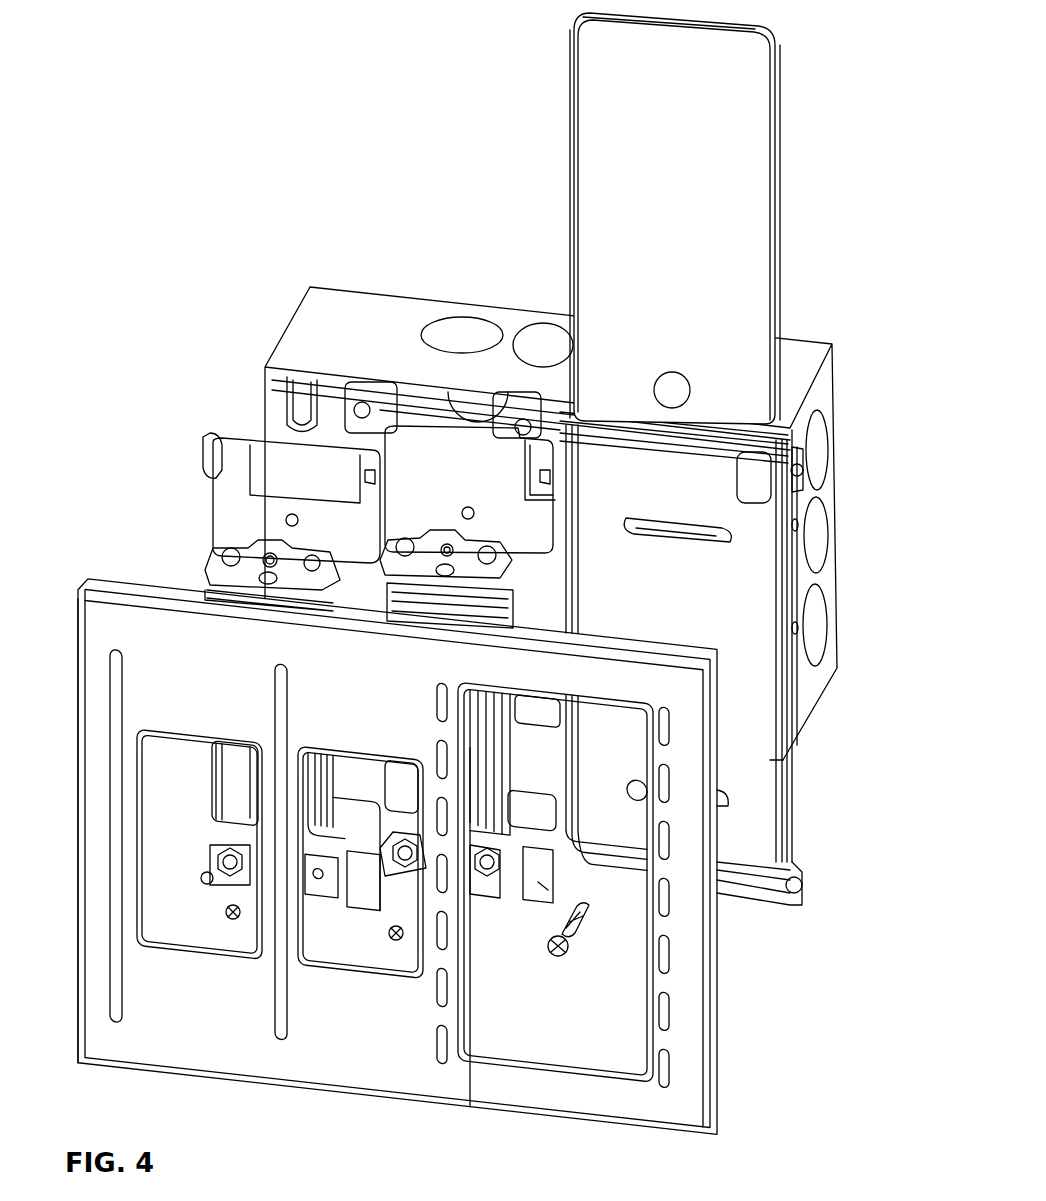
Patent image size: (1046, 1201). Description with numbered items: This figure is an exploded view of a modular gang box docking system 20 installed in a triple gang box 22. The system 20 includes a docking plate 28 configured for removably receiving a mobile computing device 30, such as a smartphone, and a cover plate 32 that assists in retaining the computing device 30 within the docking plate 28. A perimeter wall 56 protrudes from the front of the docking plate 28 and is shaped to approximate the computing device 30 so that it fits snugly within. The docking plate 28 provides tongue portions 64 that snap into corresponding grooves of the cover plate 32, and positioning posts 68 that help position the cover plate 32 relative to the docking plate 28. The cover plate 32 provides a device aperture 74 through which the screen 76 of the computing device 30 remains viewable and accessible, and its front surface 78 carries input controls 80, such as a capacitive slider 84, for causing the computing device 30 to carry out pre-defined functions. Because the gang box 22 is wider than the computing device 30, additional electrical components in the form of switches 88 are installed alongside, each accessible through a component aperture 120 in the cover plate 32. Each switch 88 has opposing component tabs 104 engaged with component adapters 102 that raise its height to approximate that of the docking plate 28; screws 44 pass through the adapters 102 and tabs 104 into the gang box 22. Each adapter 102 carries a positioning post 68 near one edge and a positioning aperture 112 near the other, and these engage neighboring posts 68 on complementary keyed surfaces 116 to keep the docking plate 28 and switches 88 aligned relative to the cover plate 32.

The modular gang box docking system 20 is at (247, 116).
The gang box 22 is at (331, 284).
The docking plate 28 is at (797, 776).
The mobile computing device 30 is at (790, 84).
The cover plate 32 is at (733, 1087).
The screw 44 is at (233, 922).
The perimeter wall 56 is at (787, 678).
The tongue portion 64 is at (255, 443).
The positioning post 68 is at (209, 457).
The device aperture 74 is at (600, 1068).
The screen 76 is at (748, 182).
The front surface of the cover plate 78 is at (490, 1094).
The input control 80 is at (118, 1027).
The capacitive slider 84 is at (113, 660).
The switch 88 is at (237, 790).
The component adapter 102 is at (208, 513).
The component tab 104 is at (222, 556).
The positioning aperture 112 is at (372, 478).
The complementary keyed surfaces 116 is at (220, 447).
The component aperture 120 is at (157, 852).